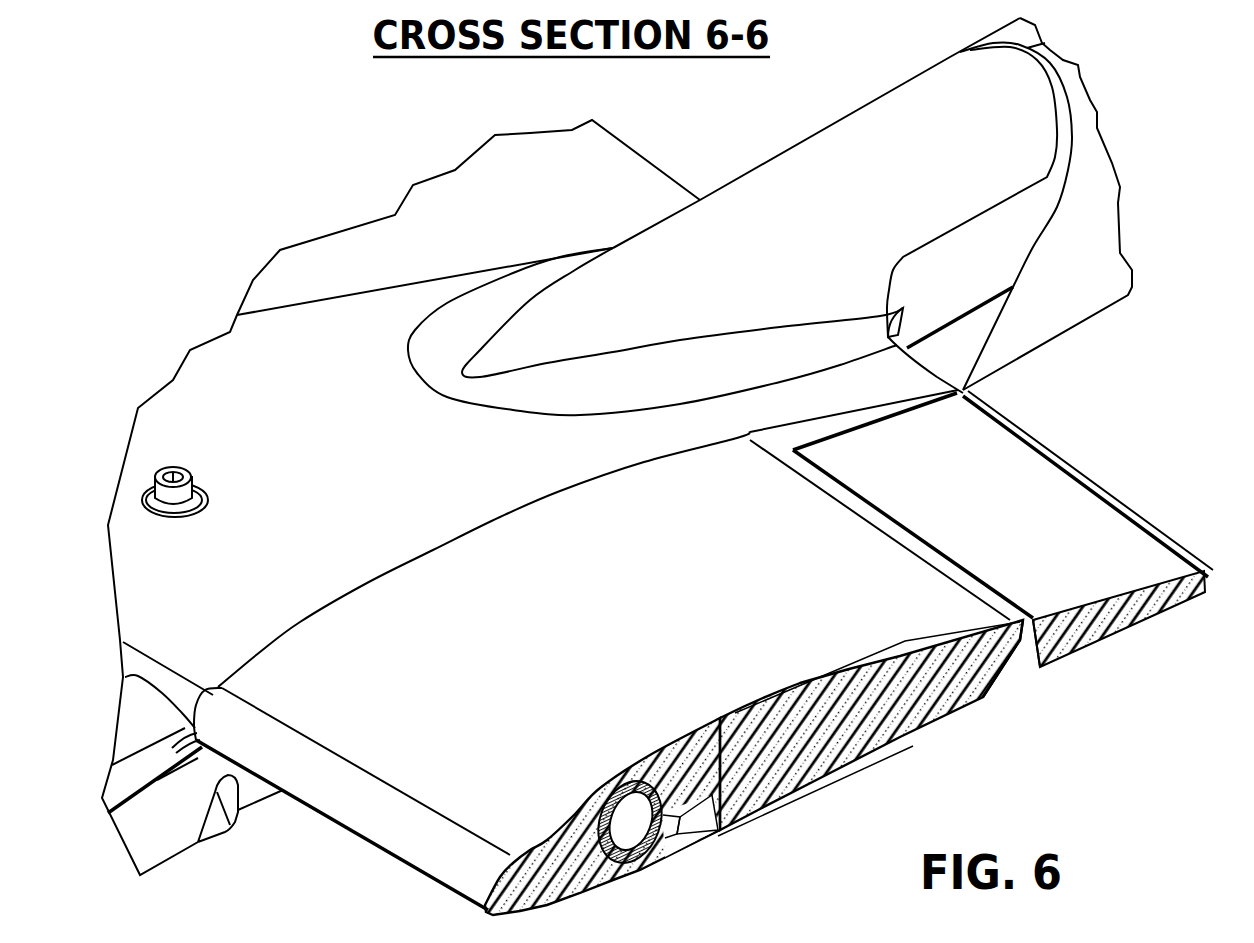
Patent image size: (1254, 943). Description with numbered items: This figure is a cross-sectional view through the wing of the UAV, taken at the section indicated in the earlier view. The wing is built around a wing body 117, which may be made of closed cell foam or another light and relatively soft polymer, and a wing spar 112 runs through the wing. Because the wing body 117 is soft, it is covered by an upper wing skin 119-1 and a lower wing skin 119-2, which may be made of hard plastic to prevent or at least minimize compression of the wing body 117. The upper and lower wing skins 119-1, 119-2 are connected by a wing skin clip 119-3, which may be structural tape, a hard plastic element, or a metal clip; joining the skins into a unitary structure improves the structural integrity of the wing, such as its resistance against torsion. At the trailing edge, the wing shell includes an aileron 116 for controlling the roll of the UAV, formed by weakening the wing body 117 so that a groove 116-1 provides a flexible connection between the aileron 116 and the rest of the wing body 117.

The wing spar 112 is at (655, 847).
The aileron 116 is at (1170, 603).
The groove 116-1 is at (1022, 665).
The wing body 117 is at (927, 730).
The upper wing skin 119-1 is at (977, 703).
The lower wing skin 119-2 is at (628, 882).
The wing skin clip 119-3 is at (376, 820).